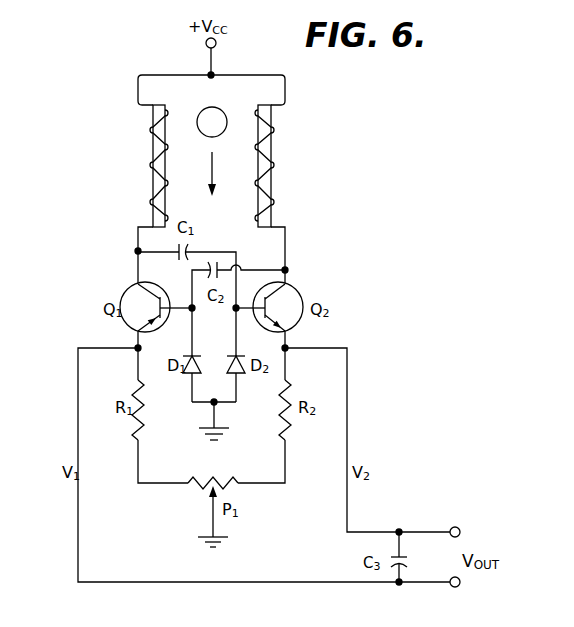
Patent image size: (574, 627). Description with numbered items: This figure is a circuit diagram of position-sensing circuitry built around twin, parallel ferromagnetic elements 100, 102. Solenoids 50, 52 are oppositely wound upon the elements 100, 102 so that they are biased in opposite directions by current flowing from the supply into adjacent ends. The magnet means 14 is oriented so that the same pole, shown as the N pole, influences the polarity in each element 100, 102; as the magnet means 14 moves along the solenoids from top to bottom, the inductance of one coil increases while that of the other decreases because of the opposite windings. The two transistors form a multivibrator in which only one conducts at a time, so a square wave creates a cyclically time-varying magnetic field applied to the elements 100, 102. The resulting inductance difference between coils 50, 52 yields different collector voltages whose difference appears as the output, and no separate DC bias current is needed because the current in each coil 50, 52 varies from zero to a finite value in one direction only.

The magnet means 14 is at (223, 133).
The solenoid 50 is at (153, 165).
The solenoid 52 is at (271, 160).
The ferromagnetic element 100 is at (157, 118).
The ferromagnetic element 102 is at (263, 110).